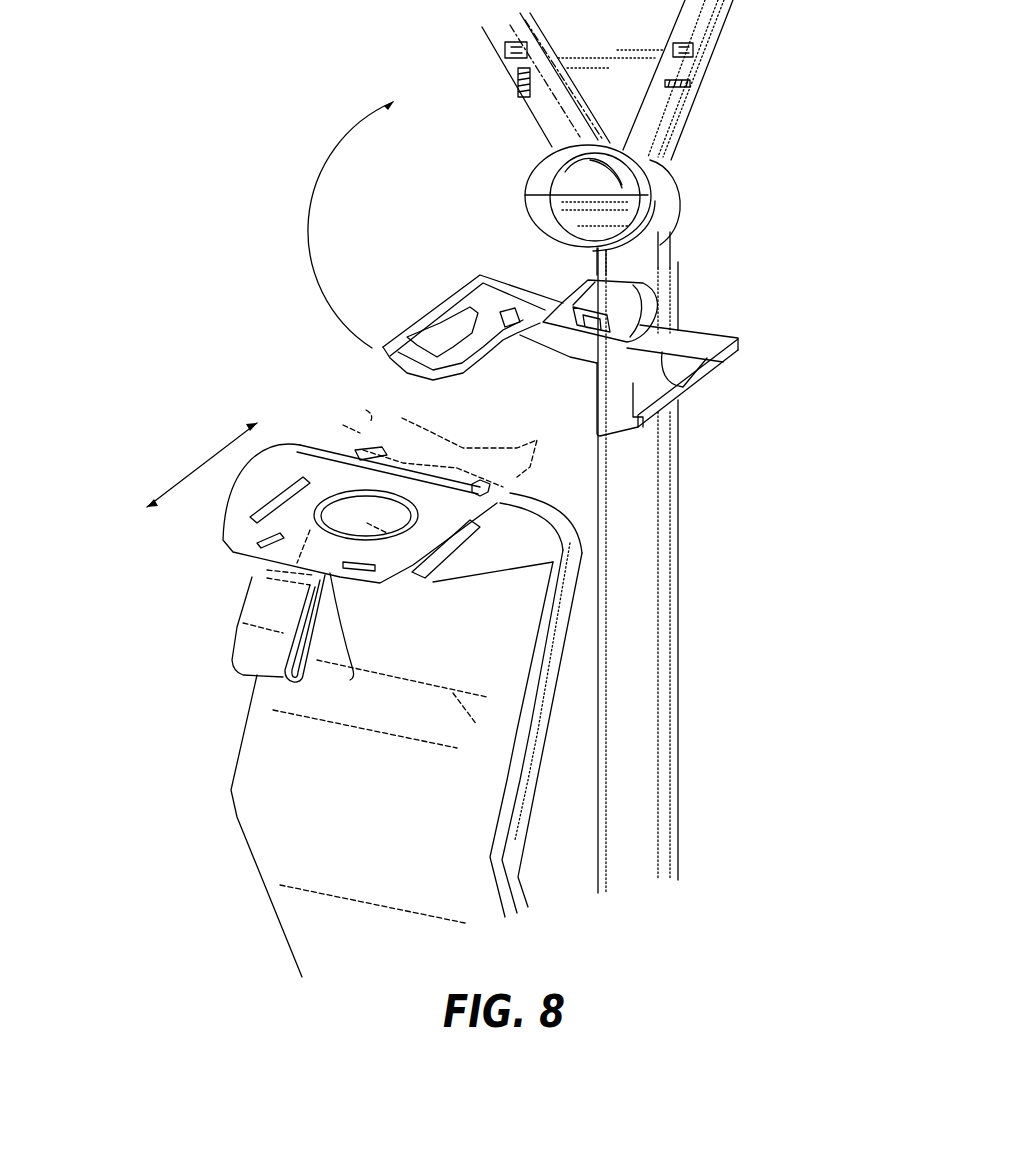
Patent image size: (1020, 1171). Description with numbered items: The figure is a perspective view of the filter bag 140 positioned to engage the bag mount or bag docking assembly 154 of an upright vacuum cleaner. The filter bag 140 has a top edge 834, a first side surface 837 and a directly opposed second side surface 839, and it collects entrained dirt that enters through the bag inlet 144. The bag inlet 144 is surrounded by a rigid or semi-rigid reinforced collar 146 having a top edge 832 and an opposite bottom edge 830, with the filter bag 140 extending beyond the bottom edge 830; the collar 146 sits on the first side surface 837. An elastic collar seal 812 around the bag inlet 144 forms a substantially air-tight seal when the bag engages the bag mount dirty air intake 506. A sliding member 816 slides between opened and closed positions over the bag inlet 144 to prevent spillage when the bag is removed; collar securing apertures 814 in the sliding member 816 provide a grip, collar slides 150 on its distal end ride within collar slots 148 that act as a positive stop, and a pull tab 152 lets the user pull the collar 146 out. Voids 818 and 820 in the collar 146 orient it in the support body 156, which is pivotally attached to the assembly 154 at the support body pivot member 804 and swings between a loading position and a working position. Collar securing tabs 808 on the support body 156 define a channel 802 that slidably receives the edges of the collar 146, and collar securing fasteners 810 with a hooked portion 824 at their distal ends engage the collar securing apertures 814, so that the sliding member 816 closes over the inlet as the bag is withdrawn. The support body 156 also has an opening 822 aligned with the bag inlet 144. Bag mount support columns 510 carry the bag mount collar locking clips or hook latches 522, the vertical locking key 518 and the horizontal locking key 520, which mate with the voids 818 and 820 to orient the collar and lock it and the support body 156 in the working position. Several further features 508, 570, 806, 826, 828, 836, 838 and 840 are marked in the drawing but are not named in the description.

The filter bag 140 is at (263, 745).
The bag inlet 144 is at (277, 462).
The collar 146 is at (233, 490).
The collar slots 148 is at (240, 485).
The collar slides 150 is at (245, 530).
The pull tab 152 is at (247, 658).
The bag mount assembly 154 is at (668, 255).
The support body 156 is at (487, 310).
The bag mount dirty air intake 506 is at (577, 218).
The ring 508 is at (543, 182).
The bag mount support columns 510 is at (657, 125).
The bag mount vertical locking key 518 is at (520, 84).
The bag mount horizontal locking key 520 is at (687, 88).
The bag mount collar locking clips 522 is at (507, 50).
The strap 570 is at (558, 123).
The channel 802 is at (440, 353).
The support body pivot member 804 is at (670, 322).
The neck 806 is at (670, 263).
The collar securing tabs 808 is at (680, 383).
The collar securing fasteners 810 is at (510, 313).
The elastic collar seal 812 is at (295, 455).
The collar securing apertures 814 is at (358, 457).
The sliding member 816 is at (505, 475).
The void 818 is at (252, 566).
The void 820 is at (357, 587).
The opening 822 is at (577, 355).
The hooked portion 824 is at (500, 323).
The arm 826 is at (490, 510).
The direction arrow 828 is at (240, 435).
The bottom edge 830 is at (405, 485).
The top edge 832 is at (347, 665).
The top edge 834 is at (212, 520).
The hole 836 is at (325, 490).
The first side surface 837 is at (550, 761).
The hidden line 838 is at (384, 738).
The second side surface 839 is at (305, 800).
The rib 840 is at (397, 590).